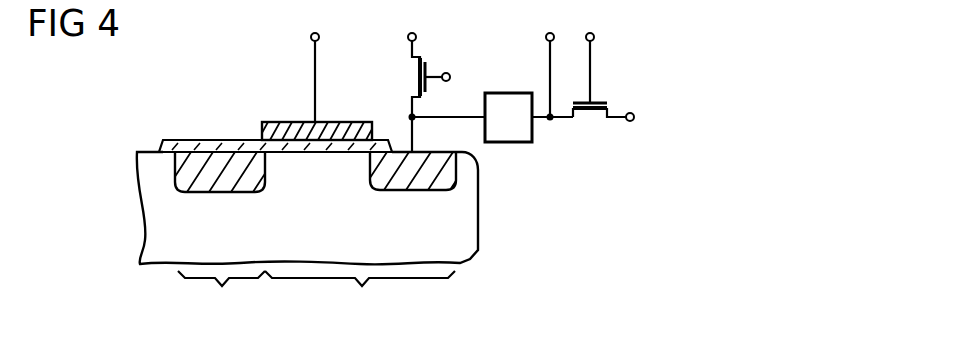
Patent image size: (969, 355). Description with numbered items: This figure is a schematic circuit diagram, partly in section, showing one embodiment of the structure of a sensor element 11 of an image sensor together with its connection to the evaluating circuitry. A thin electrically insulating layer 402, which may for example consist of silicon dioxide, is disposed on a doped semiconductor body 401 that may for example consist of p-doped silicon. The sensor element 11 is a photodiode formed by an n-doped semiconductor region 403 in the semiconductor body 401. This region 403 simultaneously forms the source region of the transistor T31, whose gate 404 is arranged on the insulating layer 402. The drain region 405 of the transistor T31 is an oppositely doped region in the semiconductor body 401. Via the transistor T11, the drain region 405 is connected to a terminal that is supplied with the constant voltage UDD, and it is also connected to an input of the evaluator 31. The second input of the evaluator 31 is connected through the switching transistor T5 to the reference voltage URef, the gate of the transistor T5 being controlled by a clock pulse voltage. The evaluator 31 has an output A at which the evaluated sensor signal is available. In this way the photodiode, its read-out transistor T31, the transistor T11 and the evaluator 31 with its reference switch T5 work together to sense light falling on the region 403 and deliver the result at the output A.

The doped semiconductor body 401 is at (478, 215).
The thin electrically insulating layer 402 is at (213, 141).
The n-doped semiconductor region 403 is at (216, 190).
The gate of transistor T31 404 is at (292, 122).
The drain region of transistor T31 405 is at (415, 188).
The evaluator 31 is at (508, 117).
The sensor element 11 is at (221, 298).
The transistor T31 is at (360, 297).
The transistor T11 is at (410, 96).
The switching transistor T5 is at (599, 128).
The output A is at (551, 58).
The constant supply voltage UDD is at (416, 21).
The reference voltage URef is at (652, 116).